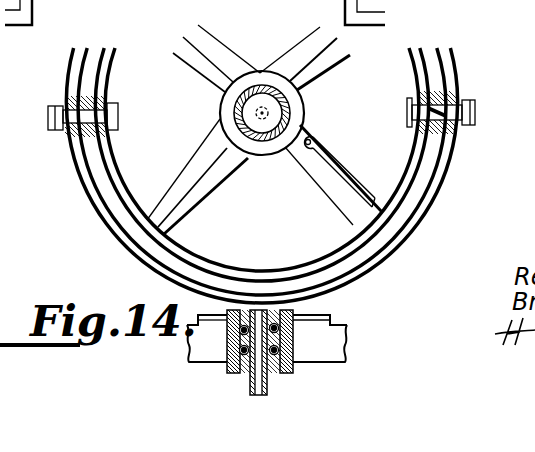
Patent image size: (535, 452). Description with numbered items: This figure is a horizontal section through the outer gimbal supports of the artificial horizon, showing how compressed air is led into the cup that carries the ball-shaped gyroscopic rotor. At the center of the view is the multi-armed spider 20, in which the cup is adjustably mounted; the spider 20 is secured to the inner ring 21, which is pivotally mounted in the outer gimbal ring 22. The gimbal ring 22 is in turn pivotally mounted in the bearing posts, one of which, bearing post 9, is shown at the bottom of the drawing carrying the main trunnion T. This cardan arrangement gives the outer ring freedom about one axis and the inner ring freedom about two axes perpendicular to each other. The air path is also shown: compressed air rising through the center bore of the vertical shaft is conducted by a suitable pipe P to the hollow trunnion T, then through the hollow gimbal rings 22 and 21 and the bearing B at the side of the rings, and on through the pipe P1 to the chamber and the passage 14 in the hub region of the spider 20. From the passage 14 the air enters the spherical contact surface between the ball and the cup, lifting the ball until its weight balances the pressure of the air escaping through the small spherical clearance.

The passage 14 is at (268, 115).
The multi-armed spider 20 is at (297, 48).
The ring 21 is at (233, 265).
The gimbal ring 22 is at (443, 182).
The bearing B is at (438, 112).
The pipe P' P1 is at (337, 178).
The pipe P is at (268, 382).
The main trunnion T is at (230, 335).
The bearing post 9 is at (328, 337).